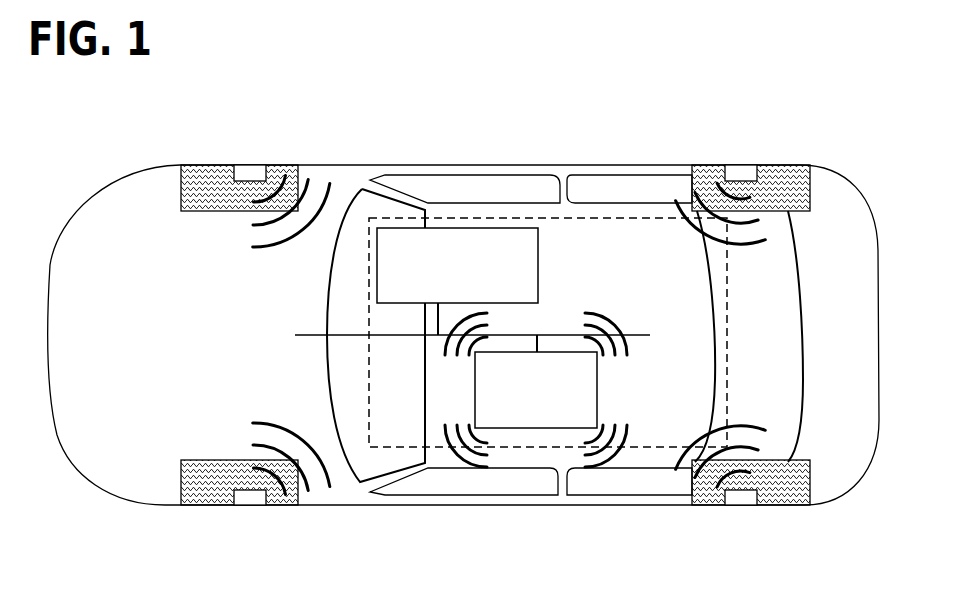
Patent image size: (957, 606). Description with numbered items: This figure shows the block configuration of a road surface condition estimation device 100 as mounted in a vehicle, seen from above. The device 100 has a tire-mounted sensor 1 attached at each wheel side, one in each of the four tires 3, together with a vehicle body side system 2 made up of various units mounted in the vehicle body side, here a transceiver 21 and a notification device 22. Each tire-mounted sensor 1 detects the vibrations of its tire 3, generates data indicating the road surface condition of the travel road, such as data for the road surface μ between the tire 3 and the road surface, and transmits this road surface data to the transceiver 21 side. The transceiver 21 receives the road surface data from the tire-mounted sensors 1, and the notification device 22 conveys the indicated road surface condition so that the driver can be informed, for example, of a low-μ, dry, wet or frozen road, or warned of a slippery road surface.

The road surface condition estimation device 100 is at (383, 142).
The tire-mounted sensor 1 is at (246, 173).
The vehicle body side system 2 is at (660, 218).
The tire 3 is at (181, 192).
The transceiver 21 is at (538, 428).
The notification device 22 is at (450, 228).